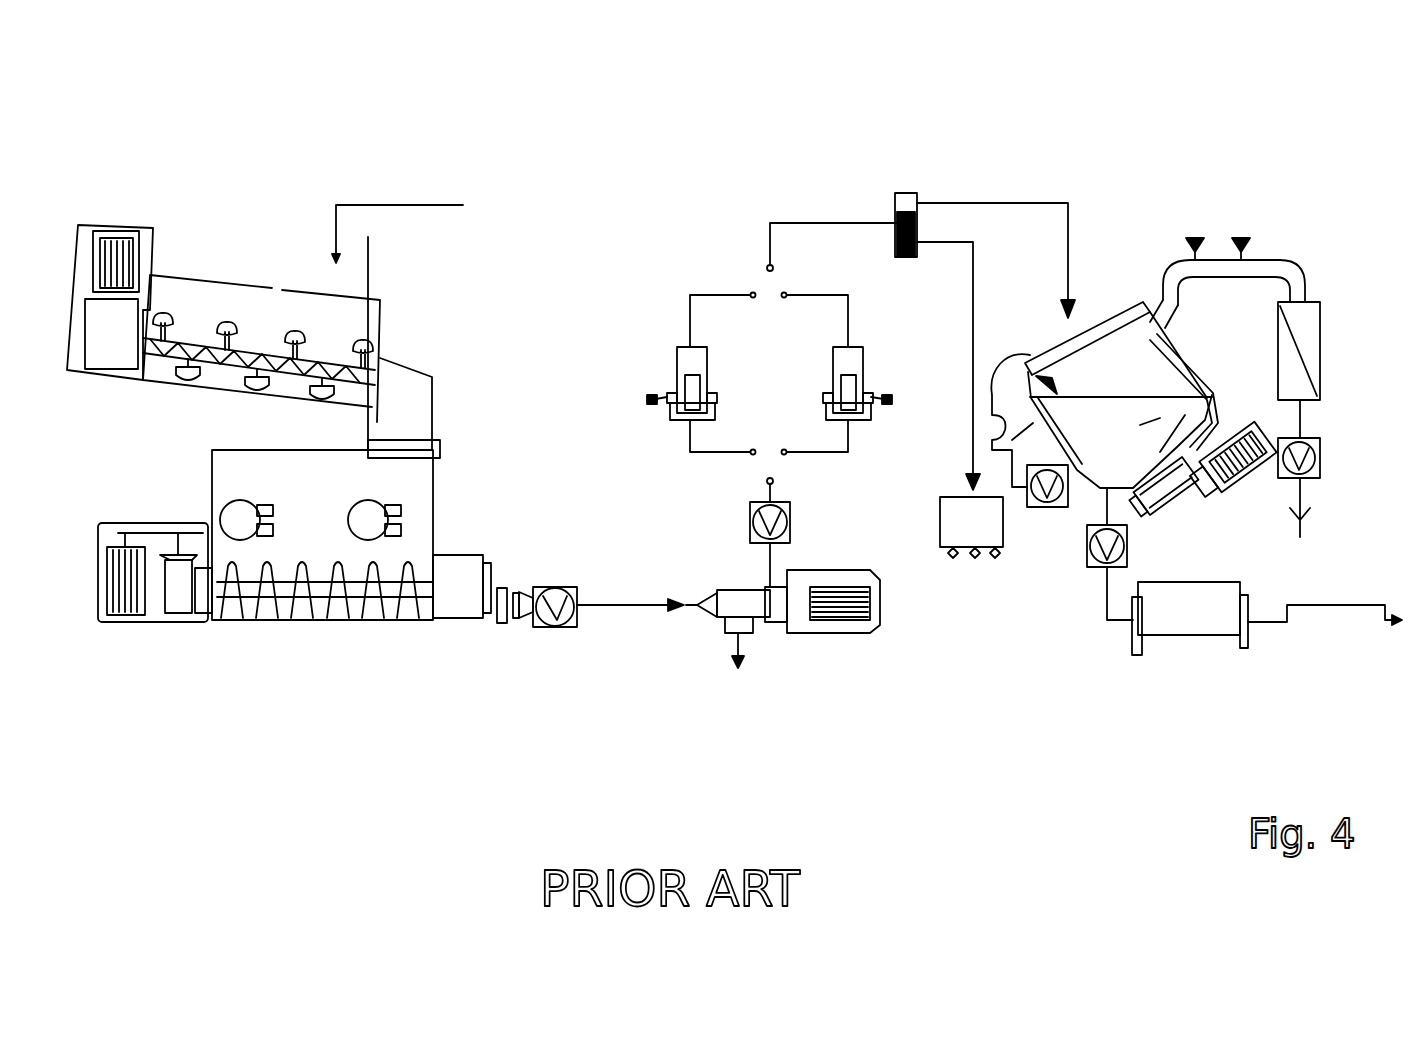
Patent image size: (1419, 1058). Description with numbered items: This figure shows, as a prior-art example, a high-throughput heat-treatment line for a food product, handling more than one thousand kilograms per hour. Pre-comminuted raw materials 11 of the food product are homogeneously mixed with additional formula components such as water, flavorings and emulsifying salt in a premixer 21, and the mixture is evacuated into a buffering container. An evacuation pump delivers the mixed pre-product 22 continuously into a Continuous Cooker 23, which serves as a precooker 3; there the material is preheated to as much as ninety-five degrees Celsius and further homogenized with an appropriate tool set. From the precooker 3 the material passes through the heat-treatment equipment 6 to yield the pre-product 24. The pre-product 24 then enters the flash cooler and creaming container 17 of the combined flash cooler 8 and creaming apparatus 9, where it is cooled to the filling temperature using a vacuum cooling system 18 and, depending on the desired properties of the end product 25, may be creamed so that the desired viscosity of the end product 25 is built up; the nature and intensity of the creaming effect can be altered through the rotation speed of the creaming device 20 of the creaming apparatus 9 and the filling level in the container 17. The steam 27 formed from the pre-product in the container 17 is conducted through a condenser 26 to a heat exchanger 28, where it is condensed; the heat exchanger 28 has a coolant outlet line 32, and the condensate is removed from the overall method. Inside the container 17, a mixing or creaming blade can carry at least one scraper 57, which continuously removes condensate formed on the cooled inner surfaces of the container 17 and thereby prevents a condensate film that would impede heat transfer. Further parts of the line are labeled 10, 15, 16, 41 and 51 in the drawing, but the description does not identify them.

The precooker 3 is at (1336, 397).
The heat-treatment equipment 6 is at (655, 368).
The flash cooler 8 is at (1290, 180).
The creaming apparatus 9 is at (1204, 505).
The heat exchanger 10 is at (1272, 662).
The raw materials 11 is at (200, 275).
The supply line 15 is at (973, 297).
The collecting hopper 16 is at (973, 565).
The flash cooler and creaming container 17 is at (1060, 368).
The vacuum cooling system 18 is at (1168, 200).
The creaming device 20 is at (1170, 380).
The premixer 21 is at (395, 283).
The mixed pre-product 22 is at (436, 410).
The Continuous Cooker 23 is at (780, 640).
The pre-product 24 is at (770, 240).
The end product 25 is at (1105, 590).
The condenser 26 is at (1253, 267).
The steam 27 is at (313, 122).
The heat exchanger 28 is at (1314, 352).
The coolant outlet line 32 is at (1264, 330).
The screw conveyor 41 is at (320, 565).
The feed pump 51 is at (543, 611).
The scraper 57 is at (1140, 418).